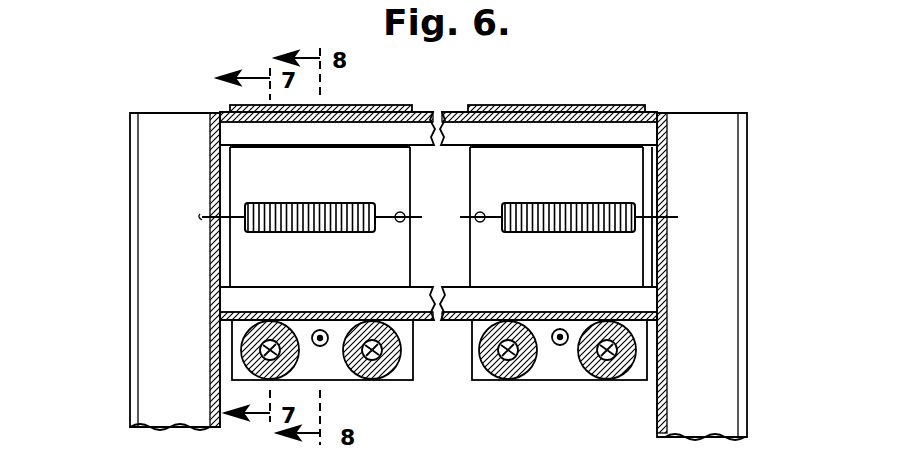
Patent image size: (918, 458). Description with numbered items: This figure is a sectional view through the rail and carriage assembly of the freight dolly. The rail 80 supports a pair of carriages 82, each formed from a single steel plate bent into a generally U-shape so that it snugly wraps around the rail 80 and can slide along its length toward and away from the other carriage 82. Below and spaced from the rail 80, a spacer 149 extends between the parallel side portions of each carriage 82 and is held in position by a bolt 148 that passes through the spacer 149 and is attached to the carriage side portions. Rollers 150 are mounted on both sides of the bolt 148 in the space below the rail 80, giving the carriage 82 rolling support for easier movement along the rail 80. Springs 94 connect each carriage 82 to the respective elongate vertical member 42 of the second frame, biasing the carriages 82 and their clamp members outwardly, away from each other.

The elongate vertical member 42 is at (150, 155).
The rail 80 is at (613, 110).
The carriage 82 is at (547, 103).
The spring 94 is at (575, 202).
The bolt 148 is at (312, 327).
The spacer 149 is at (327, 328).
The roller 150 is at (395, 372).